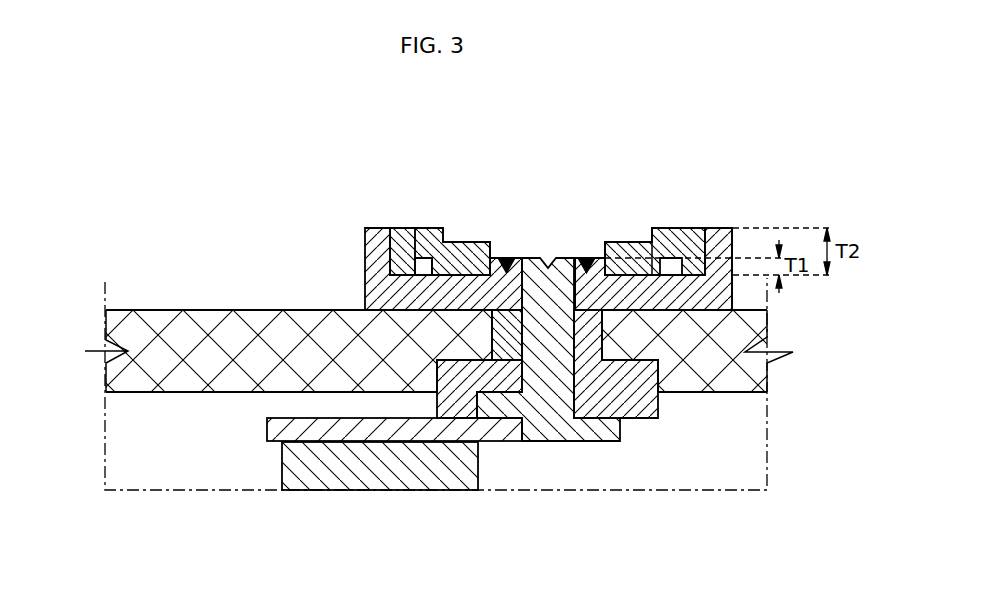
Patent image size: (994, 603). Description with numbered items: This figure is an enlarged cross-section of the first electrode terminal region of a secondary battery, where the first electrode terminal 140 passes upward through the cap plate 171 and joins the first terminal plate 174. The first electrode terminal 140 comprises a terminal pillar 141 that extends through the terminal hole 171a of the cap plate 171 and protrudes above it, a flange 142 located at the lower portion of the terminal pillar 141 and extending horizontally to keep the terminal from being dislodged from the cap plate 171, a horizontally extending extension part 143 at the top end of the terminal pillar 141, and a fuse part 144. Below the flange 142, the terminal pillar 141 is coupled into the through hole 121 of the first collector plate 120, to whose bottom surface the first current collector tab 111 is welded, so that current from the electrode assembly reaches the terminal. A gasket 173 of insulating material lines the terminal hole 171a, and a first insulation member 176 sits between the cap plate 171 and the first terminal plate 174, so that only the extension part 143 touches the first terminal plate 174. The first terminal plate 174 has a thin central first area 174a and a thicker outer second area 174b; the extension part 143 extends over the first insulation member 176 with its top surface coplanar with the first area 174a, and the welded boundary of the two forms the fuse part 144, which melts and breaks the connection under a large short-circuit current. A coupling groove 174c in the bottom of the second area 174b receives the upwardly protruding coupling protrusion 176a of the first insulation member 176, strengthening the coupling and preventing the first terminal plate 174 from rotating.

The first current collector tab 111 is at (373, 478).
The first collector plate 120 is at (282, 428).
The through hole 121 is at (562, 430).
The first electrode terminal 140 is at (550, 156).
The terminal pillar 141 is at (558, 333).
The flange 142 is at (690, 308).
The extension part 143 is at (580, 262).
The fuse part 144 is at (587, 257).
The cap plate 171 is at (188, 325).
The terminal hole 171a is at (493, 338).
The gasket 173 is at (639, 400).
The first terminal plate 174 is at (385, 156).
The first area 174a is at (503, 257).
The second area 174b is at (407, 228).
The coupling groove 174c is at (428, 228).
The first insulation member 176 is at (380, 228).
The coupling protrusion 176a is at (421, 262).